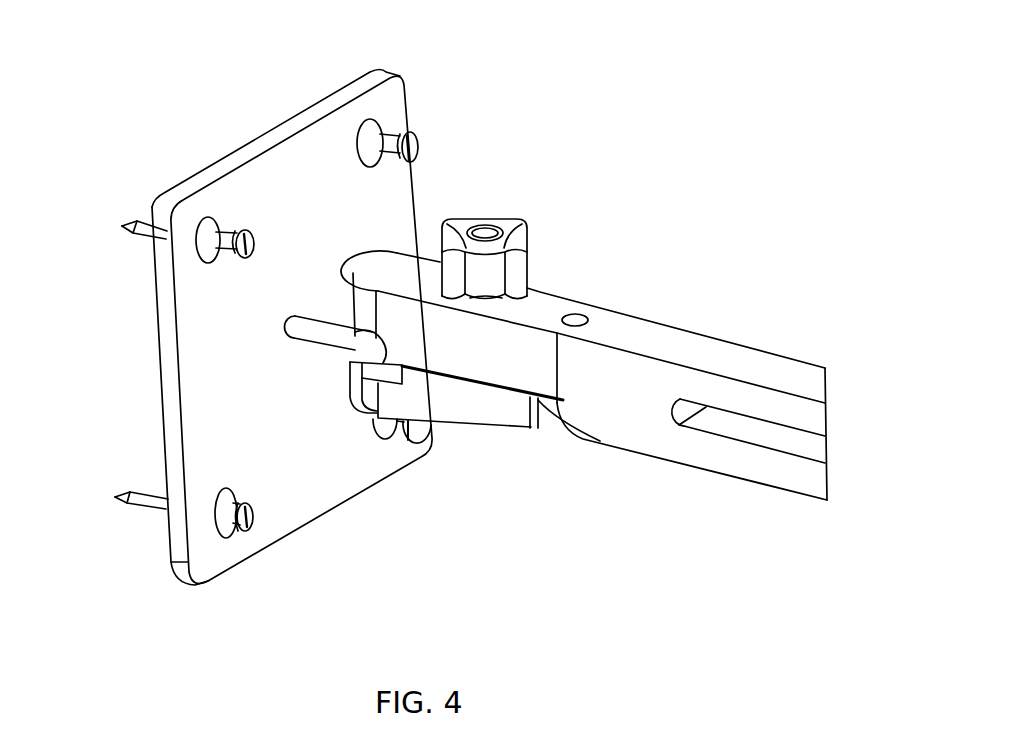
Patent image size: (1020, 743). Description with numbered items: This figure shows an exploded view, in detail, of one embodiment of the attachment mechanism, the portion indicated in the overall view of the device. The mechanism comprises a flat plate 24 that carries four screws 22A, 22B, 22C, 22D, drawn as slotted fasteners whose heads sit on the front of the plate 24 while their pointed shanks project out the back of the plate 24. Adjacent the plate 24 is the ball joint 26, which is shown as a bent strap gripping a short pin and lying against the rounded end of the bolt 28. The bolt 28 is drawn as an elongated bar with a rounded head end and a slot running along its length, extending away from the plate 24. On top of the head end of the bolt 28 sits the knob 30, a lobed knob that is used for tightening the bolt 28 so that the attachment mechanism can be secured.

The screw 22A is at (123, 227).
The screw 22B is at (390, 142).
The screw 22C is at (120, 497).
The screw 22D is at (407, 432).
The plate 24 is at (267, 132).
The ball joint 26 is at (363, 345).
The bolt 28 is at (533, 286).
The knob 30 is at (480, 218).